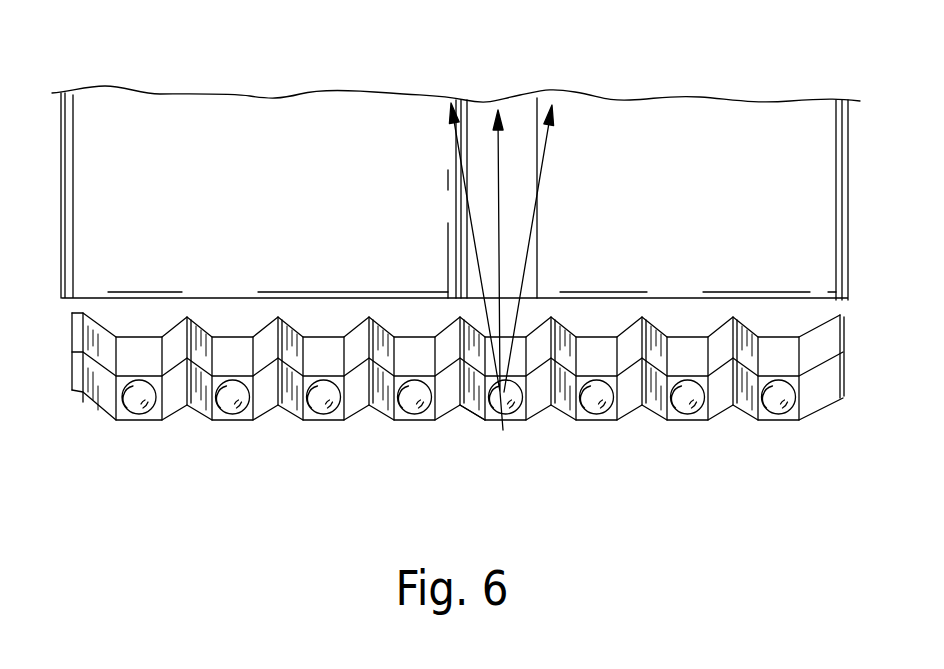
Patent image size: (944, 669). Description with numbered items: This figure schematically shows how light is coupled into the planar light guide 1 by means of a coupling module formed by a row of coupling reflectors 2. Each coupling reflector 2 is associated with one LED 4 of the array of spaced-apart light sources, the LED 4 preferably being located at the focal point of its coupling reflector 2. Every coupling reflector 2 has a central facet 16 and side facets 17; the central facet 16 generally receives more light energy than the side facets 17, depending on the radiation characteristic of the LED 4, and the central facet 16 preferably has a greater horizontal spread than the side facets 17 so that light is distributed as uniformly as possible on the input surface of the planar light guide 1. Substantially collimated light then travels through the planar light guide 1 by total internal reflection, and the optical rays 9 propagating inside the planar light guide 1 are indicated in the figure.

The planar light guide 1 is at (700, 155).
The coupling reflector 2 is at (378, 413).
The LED 4 is at (513, 410).
The optical rays 9 is at (546, 300).
The central facet 16 is at (503, 413).
The side facets 17 is at (470, 403).